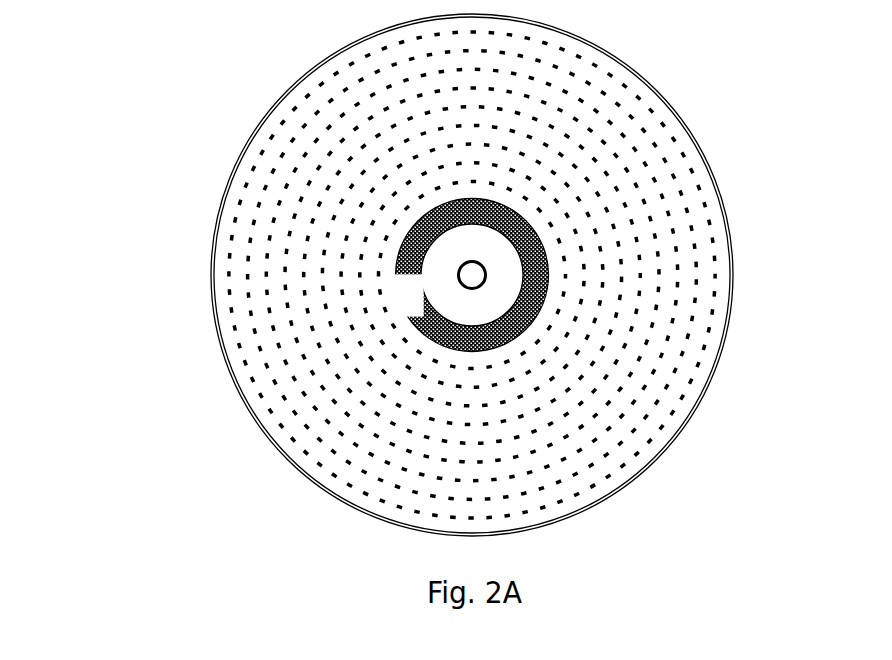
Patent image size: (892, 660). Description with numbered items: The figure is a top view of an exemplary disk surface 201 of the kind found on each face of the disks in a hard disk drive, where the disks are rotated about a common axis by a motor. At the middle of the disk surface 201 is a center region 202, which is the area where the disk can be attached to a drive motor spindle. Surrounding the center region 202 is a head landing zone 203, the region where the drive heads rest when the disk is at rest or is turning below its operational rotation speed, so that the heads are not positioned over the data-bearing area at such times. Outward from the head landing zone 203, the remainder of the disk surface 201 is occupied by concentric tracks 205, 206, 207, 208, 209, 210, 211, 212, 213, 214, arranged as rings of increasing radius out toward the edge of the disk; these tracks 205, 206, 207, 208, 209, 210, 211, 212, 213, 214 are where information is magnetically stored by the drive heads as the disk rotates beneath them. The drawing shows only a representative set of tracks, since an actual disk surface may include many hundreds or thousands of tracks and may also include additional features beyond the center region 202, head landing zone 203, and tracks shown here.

The disk surface 201 is at (141, 42).
The center region 202 is at (438, 292).
The head landing zone 203 is at (440, 193).
The concentric track 205 is at (515, 197).
The concentric track 206 is at (553, 202).
The concentric track 207 is at (582, 222).
The concentric track 208 is at (608, 248).
The concentric track 209 is at (632, 283).
The concentric track 210 is at (645, 320).
The concentric track 211 is at (658, 358).
The concentric track 212 is at (657, 393).
The concentric track 213 is at (645, 432).
The concentric track 214 is at (640, 475).